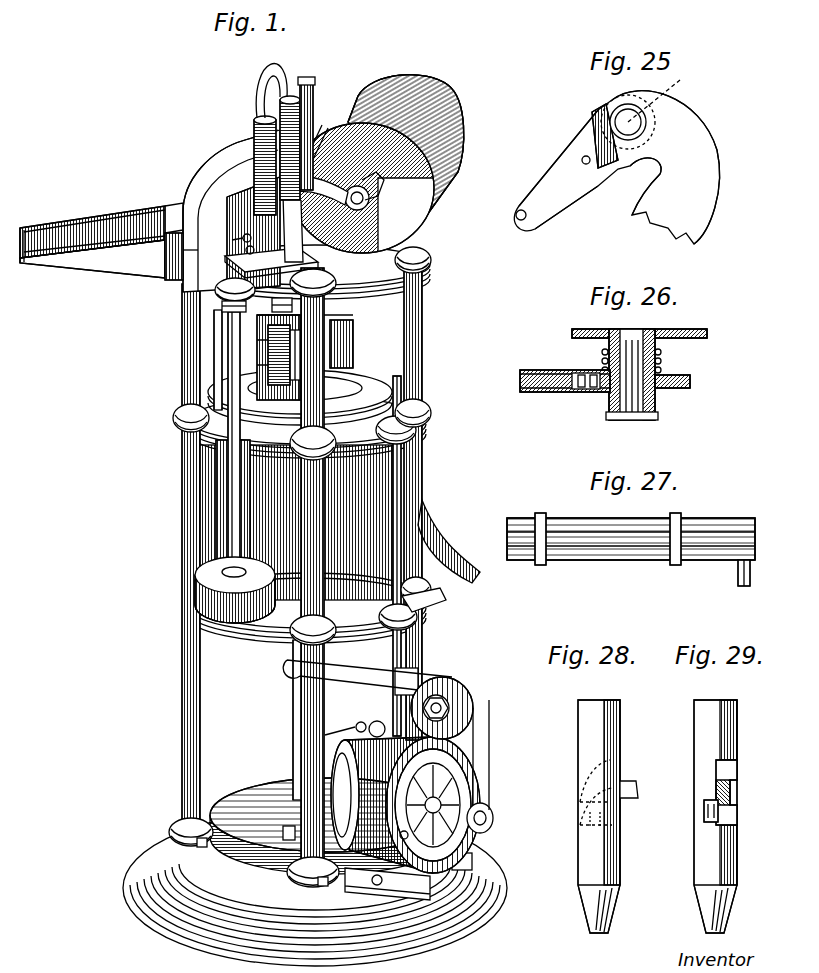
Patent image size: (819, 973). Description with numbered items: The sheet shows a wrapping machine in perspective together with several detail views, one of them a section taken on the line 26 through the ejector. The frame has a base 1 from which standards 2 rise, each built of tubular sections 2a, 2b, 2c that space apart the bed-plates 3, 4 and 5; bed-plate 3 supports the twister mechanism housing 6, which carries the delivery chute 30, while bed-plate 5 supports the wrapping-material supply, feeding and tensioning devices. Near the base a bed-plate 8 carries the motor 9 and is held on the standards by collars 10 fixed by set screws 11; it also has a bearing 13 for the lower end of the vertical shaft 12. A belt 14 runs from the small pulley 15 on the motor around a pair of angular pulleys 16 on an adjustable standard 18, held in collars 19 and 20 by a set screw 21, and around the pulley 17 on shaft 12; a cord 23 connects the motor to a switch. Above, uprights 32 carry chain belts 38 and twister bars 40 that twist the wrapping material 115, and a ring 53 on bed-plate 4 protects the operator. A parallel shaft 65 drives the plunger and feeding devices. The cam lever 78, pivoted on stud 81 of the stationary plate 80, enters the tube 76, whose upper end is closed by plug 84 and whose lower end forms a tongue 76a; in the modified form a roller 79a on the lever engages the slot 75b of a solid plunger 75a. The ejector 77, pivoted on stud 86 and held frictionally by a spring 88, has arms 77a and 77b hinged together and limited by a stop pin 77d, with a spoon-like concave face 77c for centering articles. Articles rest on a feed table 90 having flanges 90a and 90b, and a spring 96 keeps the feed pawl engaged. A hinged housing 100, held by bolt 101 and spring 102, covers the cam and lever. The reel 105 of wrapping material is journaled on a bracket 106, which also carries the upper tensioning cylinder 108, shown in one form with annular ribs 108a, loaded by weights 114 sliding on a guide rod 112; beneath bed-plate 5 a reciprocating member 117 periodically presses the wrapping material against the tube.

In FIG. 1, the base 1 is at (136, 857).
In FIG. 1, the standards 2 is at (422, 362).
In FIG. 1, the tubular section 2a is at (423, 638).
In FIG. 1, the tubular section 2b is at (182, 527).
In FIG. 1, the tubular section 2c is at (422, 332).
In FIG. 1, the bed-plate 3 is at (432, 585).
In FIG. 1, the bed-plate 4 is at (443, 406).
In FIG. 1, the bed-plate 5 is at (430, 255).
In FIG. 1, the twister mechanism housing 6 is at (216, 462).
In FIG. 1, the bed-plate 8 is at (252, 800).
In FIG. 1, the motor 9 is at (472, 778).
In FIG. 1, the collars 10 is at (176, 822).
In FIG. 1, the set screws 11 is at (197, 842).
In FIG. 1, the shaft 12 is at (293, 722).
In FIG. 1, the bearing 13 is at (288, 840).
In FIG. 1, the belt 14 is at (380, 670).
In FIG. 1, the pulley 15 is at (492, 810).
In FIG. 1, the pulleys 16 is at (474, 696).
In FIG. 1, the pulley 17 is at (262, 640).
In FIG. 1, the standard or bracket 18 is at (401, 470).
In FIG. 1, the collar 19 is at (418, 622).
In FIG. 1, the collar 20 is at (416, 434).
In FIG. 1, the set screw 21 is at (446, 602).
In FIG. 1, the cord or cable 23 is at (352, 733).
In FIG. 25, the section line 26 is at (560, 195).
In FIG. 1, the delivery chute 30 is at (468, 575).
In FIG. 1, the uprights 32 is at (257, 327).
In FIG. 1, the chain belts 38 is at (268, 345).
In FIG. 1, the bars 40 is at (290, 359).
In FIG. 1, the ring or annulus 53 is at (362, 378).
In FIG. 1, the shaft 65 is at (228, 393).
In FIG. 28, the plunger 75a is at (620, 888).
In FIG. 29, the plunger 75a is at (694, 740).
In FIG. 28, the slot 75b is at (578, 803).
In FIG. 29, the slot 75b is at (704, 810).
In FIG. 1, the tube 76 is at (314, 100).
In FIG. 1, the tongue 76a is at (273, 299).
In FIG. 25, the ejector 77 is at (582, 206).
In FIG. 26, the ejector 77 is at (565, 390).
In FIG. 25, the arm 77a is at (552, 172).
In FIG. 26, the arm 77a is at (556, 370).
In FIG. 25, the arm 77b is at (712, 186).
In FIG. 26, the arm 77b is at (688, 388).
In FIG. 25, the concave portion 77c is at (628, 166).
In FIG. 25, the pin or stop 77d is at (594, 120).
In FIG. 26, the pin or stop 77d is at (584, 392).
In FIG. 28, the cam lever 78 is at (640, 790).
In FIG. 29, the cam lever 78 is at (731, 790).
In FIG. 28, the roller 79a is at (580, 825).
In FIG. 29, the roller 79a is at (704, 820).
In FIG. 1, the plate 80 is at (244, 193).
In FIG. 26, the plate 80 is at (707, 338).
In FIG. 1, the pivot pin or stud 81 is at (243, 238).
In FIG. 1, the threaded plug 84 is at (312, 78).
In FIG. 26, the stud or pin 86 is at (632, 421).
In FIG. 26, the spring 88 is at (662, 362).
In FIG. 1, the feed table 90 is at (90, 268).
In FIG. 1, the marginal flange 90a is at (80, 226).
In FIG. 1, the marginal flange 90b is at (165, 257).
In FIG. 1, the spring 96 is at (218, 298).
In FIG. 1, the housing 100 is at (236, 163).
In FIG. 1, the bolt 101 is at (240, 262).
In FIG. 1, the spring 102 is at (246, 250).
In FIG. 1, the reel 105 is at (433, 210).
In FIG. 1, the bracket 106 is at (304, 240).
In FIG. 1, the upper cylinder 108 is at (320, 124).
In FIG. 27, the annular ribs 108a is at (544, 520).
In FIG. 1, the rod or guide 112 is at (252, 70).
In FIG. 1, the weights 114 is at (258, 112).
In FIG. 1, the wrapping material 115 is at (440, 100).
In FIG. 1, the reciprocating member 117 is at (222, 307).